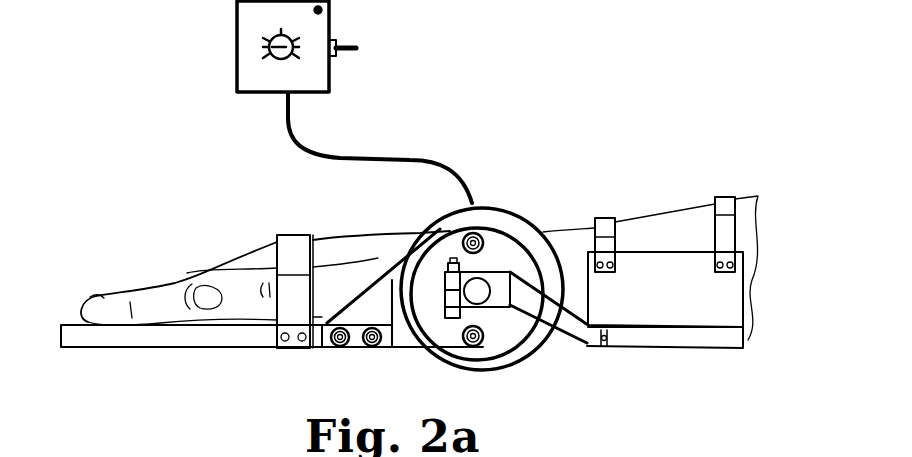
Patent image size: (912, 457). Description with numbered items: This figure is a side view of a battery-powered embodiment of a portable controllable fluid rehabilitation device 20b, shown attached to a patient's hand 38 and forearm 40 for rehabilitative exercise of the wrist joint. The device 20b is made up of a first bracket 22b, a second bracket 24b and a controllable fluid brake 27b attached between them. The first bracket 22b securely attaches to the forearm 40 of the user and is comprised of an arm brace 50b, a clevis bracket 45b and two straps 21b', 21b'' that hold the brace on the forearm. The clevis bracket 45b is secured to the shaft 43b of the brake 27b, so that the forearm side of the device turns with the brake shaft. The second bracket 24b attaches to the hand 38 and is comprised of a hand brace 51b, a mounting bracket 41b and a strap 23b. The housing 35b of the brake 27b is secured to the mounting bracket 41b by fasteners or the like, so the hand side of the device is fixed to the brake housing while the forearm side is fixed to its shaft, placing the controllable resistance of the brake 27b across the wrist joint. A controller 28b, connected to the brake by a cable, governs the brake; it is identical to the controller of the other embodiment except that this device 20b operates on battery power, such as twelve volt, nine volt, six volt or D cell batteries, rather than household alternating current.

The controller 28b is at (232, 47).
The portable controllable fluid rehabilitation device 20b is at (488, 173).
The controllable fluid brake 27b is at (508, 208).
The shaft 43b is at (485, 298).
The mounting bracket 41b is at (401, 344).
The clevis bracket 45b is at (632, 348).
The first bracket 22b is at (743, 352).
The second bracket 24b is at (145, 348).
The hand brace 51b is at (88, 338).
The hand 38 is at (360, 292).
The strap 23b is at (288, 236).
The housing 35b is at (366, 201).
The forearm 40 is at (679, 241).
The arm brace 50b is at (690, 314).
The strap 21b' is at (643, 217).
The strap 21b'' is at (754, 218).